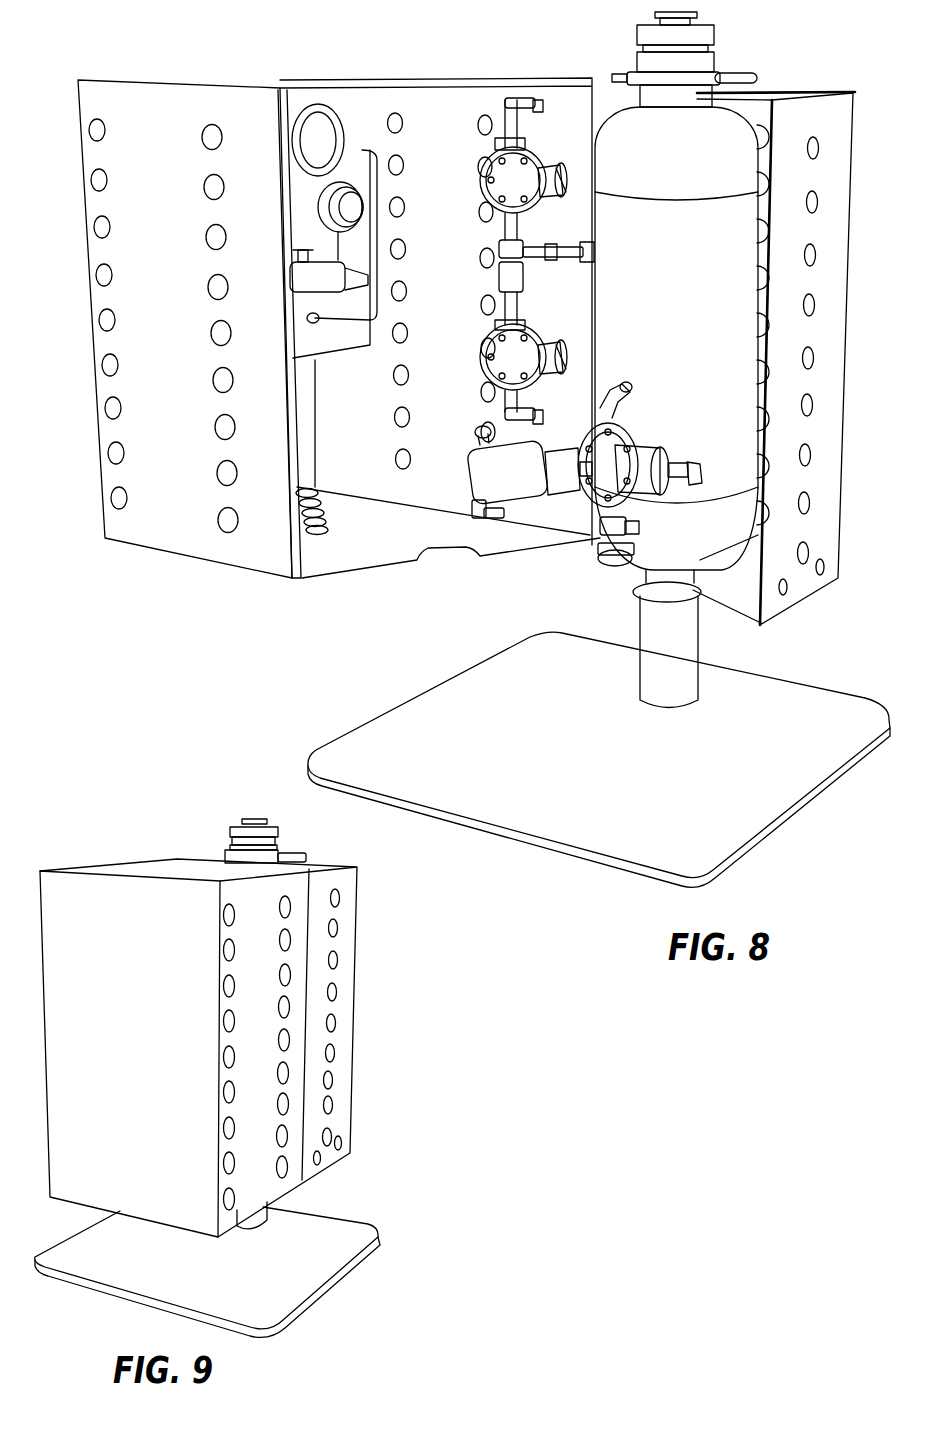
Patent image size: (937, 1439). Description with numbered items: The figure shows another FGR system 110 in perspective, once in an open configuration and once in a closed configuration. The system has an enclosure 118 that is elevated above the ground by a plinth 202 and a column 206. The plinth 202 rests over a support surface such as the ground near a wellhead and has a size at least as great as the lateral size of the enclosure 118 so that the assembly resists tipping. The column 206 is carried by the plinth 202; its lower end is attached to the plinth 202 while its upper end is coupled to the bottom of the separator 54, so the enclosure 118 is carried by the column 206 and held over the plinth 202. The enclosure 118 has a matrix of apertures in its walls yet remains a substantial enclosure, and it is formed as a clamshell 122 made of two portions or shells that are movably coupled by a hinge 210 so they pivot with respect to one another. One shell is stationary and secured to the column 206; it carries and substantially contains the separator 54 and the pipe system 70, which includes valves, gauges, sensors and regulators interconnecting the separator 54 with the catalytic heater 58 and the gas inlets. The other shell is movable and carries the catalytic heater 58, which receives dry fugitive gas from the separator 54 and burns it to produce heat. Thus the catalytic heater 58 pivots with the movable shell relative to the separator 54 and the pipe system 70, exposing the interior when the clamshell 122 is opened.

In FIG. 8, the separator 54 is at (713, 282).
In FIG. 8, the catalytic heater 58 is at (350, 123).
In FIG. 8, the pipe system 70 is at (466, 372).
In FIG. 8, the FGR system 110 is at (296, 620).
In FIG. 9, the FGR system 110 is at (372, 1077).
In FIG. 8, the enclosure 118 is at (162, 527).
In FIG. 9, the enclosure 118 is at (338, 950).
In FIG. 8, the clamshell 122 is at (152, 115).
In FIG. 9, the clamshell 122 is at (92, 913).
In FIG. 8, the plinth 202 is at (733, 797).
In FIG. 9, the plinth 202 is at (300, 1272).
In FIG. 8, the column 206 is at (677, 638).
In FIG. 9, the column 206 is at (270, 1203).
In FIG. 8, the hinge 210 is at (592, 80).